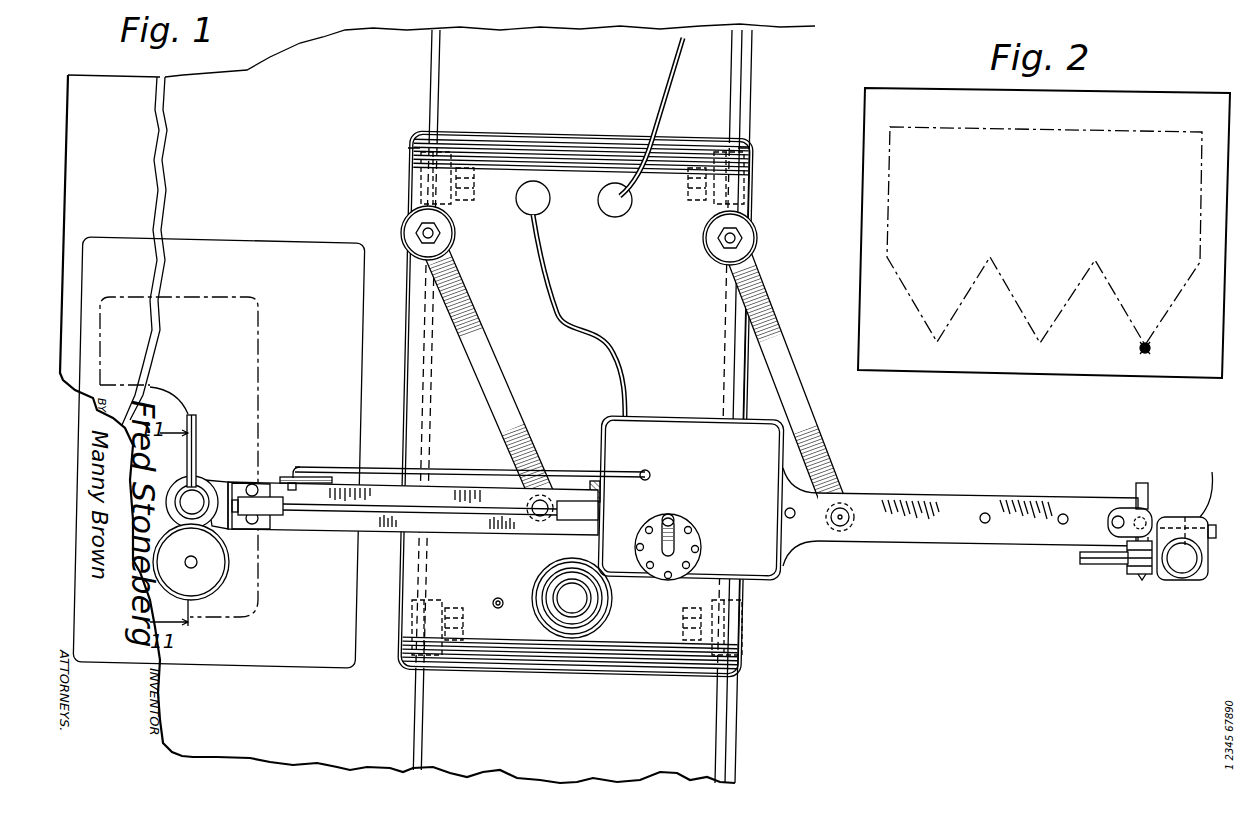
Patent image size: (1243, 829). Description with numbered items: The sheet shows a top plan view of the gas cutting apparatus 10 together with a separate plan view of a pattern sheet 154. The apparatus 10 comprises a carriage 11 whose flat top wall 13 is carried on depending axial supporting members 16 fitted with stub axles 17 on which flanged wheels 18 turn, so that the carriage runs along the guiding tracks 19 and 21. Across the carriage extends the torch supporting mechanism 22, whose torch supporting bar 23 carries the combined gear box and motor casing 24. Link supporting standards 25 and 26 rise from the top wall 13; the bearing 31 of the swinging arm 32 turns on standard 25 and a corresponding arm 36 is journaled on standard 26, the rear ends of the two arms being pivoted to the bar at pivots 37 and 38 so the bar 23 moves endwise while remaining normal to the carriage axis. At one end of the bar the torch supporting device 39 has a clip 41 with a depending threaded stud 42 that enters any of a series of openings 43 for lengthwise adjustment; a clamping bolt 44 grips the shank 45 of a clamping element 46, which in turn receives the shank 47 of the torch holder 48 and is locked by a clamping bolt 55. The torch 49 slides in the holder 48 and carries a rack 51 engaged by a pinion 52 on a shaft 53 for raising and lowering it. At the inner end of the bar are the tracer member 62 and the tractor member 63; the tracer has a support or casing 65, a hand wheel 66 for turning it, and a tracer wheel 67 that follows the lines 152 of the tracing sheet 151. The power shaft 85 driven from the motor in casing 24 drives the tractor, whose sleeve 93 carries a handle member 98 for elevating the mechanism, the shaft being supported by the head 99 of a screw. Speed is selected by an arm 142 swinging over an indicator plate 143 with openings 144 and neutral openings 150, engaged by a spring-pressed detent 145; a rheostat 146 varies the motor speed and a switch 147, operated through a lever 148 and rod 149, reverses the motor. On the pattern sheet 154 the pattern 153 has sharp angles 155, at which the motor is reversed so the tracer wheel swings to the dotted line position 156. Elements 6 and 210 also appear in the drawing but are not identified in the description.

In FIG. 1, the pivot pin 6 is at (796, 513).
In FIG. 1, the gas cutting apparatus 10 is at (303, 522).
In FIG. 1, the carriage 11 is at (540, 134).
In FIG. 1, the top wall 13 is at (579, 190).
In FIG. 1, the axial supporting members 16 is at (706, 165).
In FIG. 1, the stub axles 17 is at (410, 160).
In FIG. 1, the flanged wheels 18 is at (440, 150).
In FIG. 1, the track 19 is at (430, 95).
In FIG. 1, the track 21 is at (735, 72).
In FIG. 1, the torch supporting mechanism 22 is at (828, 429).
In FIG. 1, the torch supporting bar 23 is at (926, 489).
In FIG. 1, the combined gear box and motor casing 24 is at (705, 430).
In FIG. 1, the link supporting standard 25 is at (420, 228).
In FIG. 1, the link supporting standard 26 is at (742, 236).
In FIG. 1, the bearing 31 is at (405, 234).
In FIG. 1, the swinging arm 32 is at (455, 352).
In FIG. 1, the arm 36 is at (790, 352).
In FIG. 1, the pivot 37 is at (535, 520).
In FIG. 1, the pivot 38 is at (846, 524).
In FIG. 1, the torch supporting device 39 is at (1168, 515).
In FIG. 1, the clip 41 is at (1118, 508).
In FIG. 1, the threaded stud 42 is at (1144, 518).
In FIG. 1, the openings 43 is at (1060, 524).
In FIG. 1, the clamping bolt 44 is at (1112, 518).
In FIG. 1, the shank 45 is at (1140, 482).
In FIG. 1, the clamping element 46 is at (1130, 574).
In FIG. 1, the shank 47 is at (1095, 565).
In FIG. 1, the torch holder 48 is at (1165, 572).
In FIG. 1, the torch 49 is at (1182, 578).
In FIG. 1, the rack 51 is at (1199, 490).
In FIG. 1, the pinion 52 is at (1180, 517).
In FIG. 1, the shaft 53 is at (1215, 530).
In FIG. 1, the clamping bolt 55 is at (1141, 578).
In FIG. 1, the tracer member 62 is at (157, 591).
In FIG. 2, the tracer member 62 is at (1138, 350).
In FIG. 1, the tractor member 63 is at (164, 490).
In FIG. 1, the support or casing 65 is at (235, 532).
In FIG. 1, the hand wheel 66 is at (220, 570).
In FIG. 2, the tracer wheel 67 is at (1150, 344).
In FIG. 1, the power shaft 85 is at (400, 532).
In FIG. 1, the sleeve 93 is at (200, 490).
In FIG. 1, the handle member 98 is at (197, 425).
In FIG. 1, the head 99 is at (186, 496).
In FIG. 1, the arm 142 is at (690, 528).
In FIG. 1, the indicator plate 143 is at (648, 525).
In FIG. 1, the openings 144 is at (636, 545).
In FIG. 1, the spring-pressed detent 145 is at (672, 516).
In FIG. 1, the rheostat 146 is at (572, 612).
In FIG. 1, the switch 147 is at (648, 470).
In FIG. 1, the lever 148 is at (308, 472).
In FIG. 1, the rod 149 is at (440, 470).
In FIG. 1, the openings 150 is at (650, 568).
In FIG. 1, the tracing sheet 151 is at (297, 652).
In FIG. 1, the lines 152 is at (236, 612).
In FIG. 2, the pattern 153 is at (890, 215).
In FIG. 2, the pattern sheet 154 is at (865, 150).
In FIG. 2, the sharp angles 155 is at (1040, 343).
In FIG. 2, the dotted line position 156 is at (1150, 352).
In FIG. 1, the hole 210 is at (498, 598).